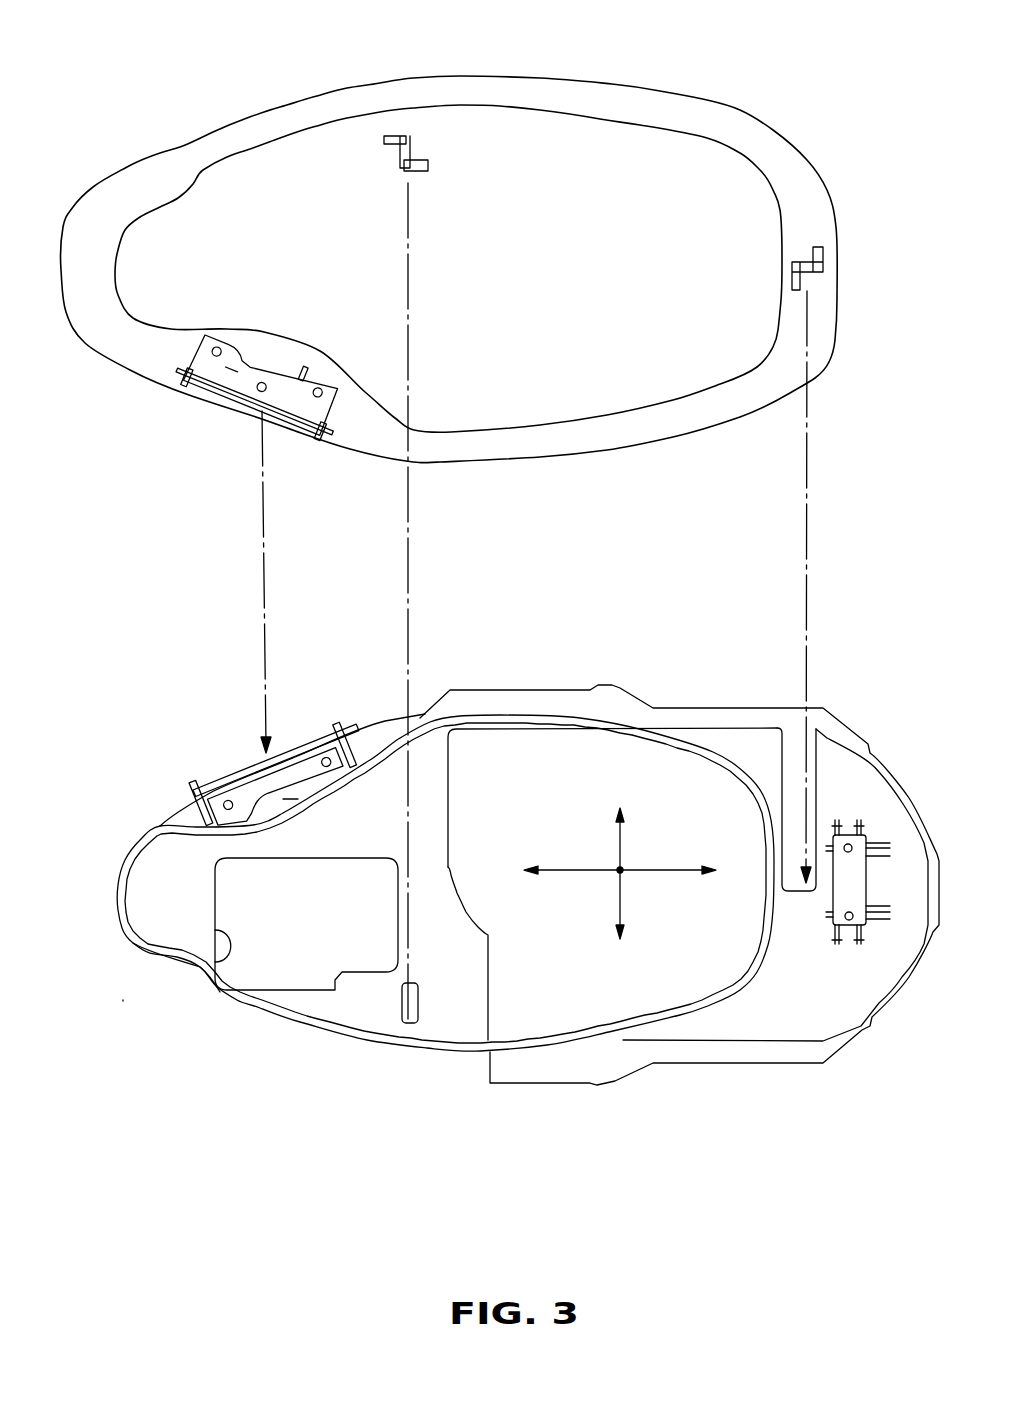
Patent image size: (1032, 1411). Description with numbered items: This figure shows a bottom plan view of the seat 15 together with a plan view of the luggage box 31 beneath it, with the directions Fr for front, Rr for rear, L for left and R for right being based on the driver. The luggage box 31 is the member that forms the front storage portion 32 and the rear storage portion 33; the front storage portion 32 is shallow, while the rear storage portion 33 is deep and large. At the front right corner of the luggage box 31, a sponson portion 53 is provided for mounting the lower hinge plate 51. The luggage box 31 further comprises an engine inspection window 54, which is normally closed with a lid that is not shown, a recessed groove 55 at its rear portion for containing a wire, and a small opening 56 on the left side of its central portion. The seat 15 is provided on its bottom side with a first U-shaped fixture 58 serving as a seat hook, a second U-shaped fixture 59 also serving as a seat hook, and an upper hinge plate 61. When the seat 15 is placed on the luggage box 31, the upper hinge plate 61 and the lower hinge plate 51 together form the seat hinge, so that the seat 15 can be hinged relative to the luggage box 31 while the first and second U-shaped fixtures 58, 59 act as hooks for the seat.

The seat 15 is at (213, 140).
The luggage box 31 is at (268, 1031).
The front storage portion 32 is at (482, 1139).
The rear storage portion 33 is at (679, 924).
The lower hinge plate 51 is at (233, 780).
The sponson portion 53 is at (291, 800).
The engine inspection window 54 is at (222, 970).
The recessed groove 55 is at (799, 814).
The small opening 56 is at (410, 1023).
The first U-shaped fixture 58 is at (414, 148).
The second U-shaped fixture 59 is at (812, 246).
The upper hinge plate 61 is at (230, 373).